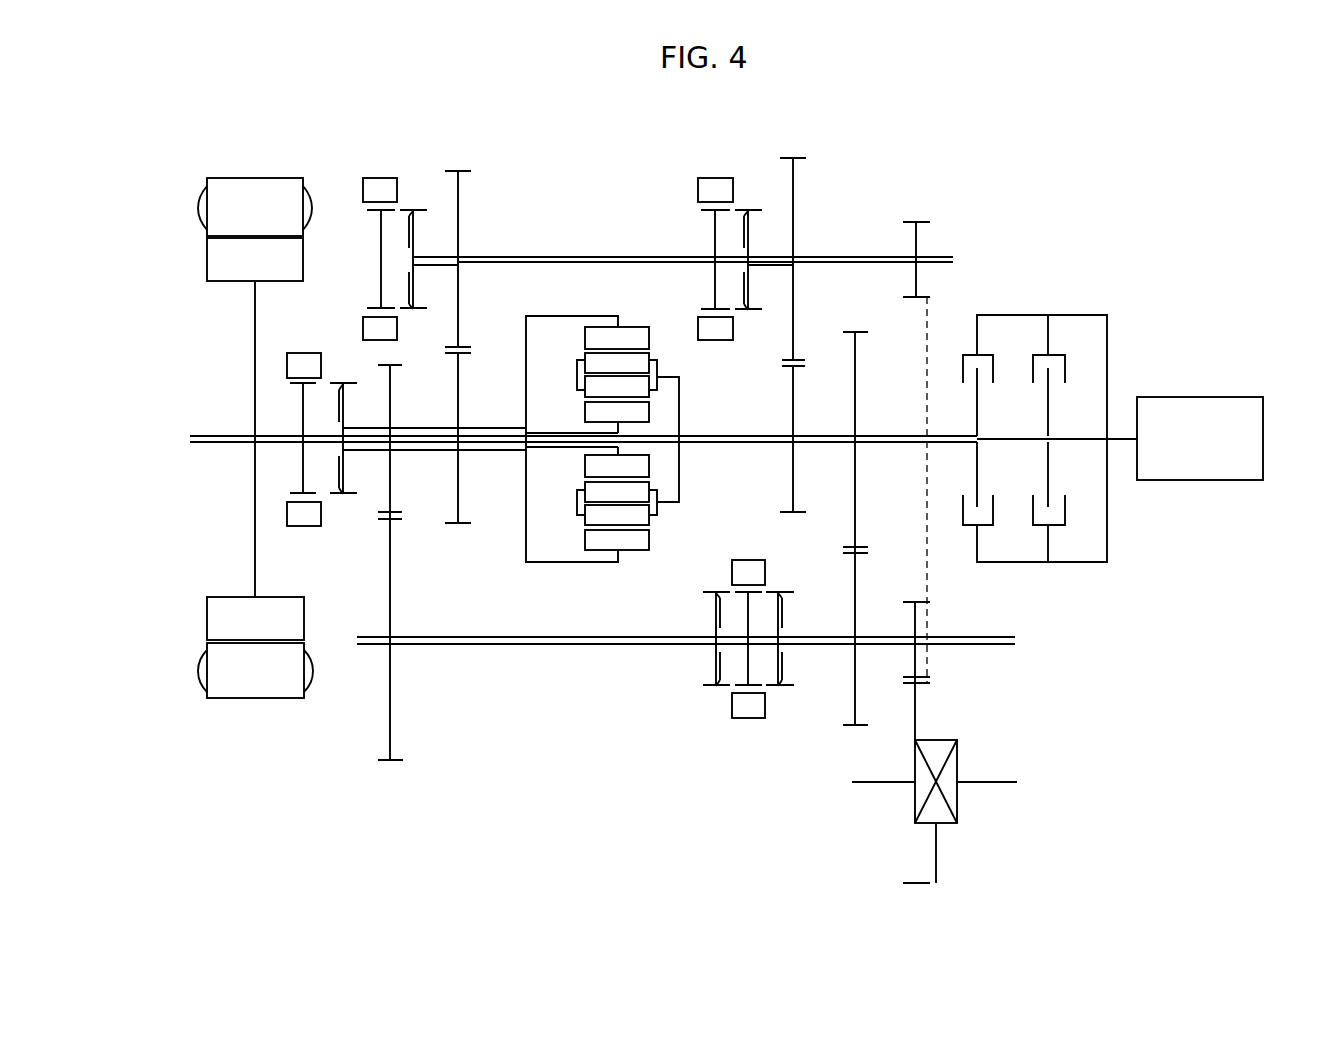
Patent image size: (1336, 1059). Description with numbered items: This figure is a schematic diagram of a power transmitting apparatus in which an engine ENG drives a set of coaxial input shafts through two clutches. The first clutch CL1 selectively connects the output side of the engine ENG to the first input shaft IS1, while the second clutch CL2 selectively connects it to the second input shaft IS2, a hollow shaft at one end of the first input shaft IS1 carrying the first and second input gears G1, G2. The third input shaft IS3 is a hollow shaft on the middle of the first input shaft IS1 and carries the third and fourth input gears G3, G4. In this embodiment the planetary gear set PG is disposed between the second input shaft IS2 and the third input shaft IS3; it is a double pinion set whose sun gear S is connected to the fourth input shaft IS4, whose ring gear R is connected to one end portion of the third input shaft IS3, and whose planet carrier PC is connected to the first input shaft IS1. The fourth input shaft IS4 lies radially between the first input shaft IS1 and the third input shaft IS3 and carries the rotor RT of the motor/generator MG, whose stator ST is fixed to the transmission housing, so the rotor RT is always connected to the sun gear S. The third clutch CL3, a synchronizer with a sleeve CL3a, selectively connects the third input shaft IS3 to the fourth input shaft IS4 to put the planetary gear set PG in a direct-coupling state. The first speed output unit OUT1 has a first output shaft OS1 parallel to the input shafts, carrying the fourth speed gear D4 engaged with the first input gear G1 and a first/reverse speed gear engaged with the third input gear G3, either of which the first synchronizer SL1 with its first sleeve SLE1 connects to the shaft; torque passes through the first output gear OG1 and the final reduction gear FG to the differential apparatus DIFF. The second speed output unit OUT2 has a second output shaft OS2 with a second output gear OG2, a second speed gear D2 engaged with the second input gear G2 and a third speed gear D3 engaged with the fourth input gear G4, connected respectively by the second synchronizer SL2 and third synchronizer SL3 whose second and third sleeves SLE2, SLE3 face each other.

The motor/generator MG is at (223, 438).
The stator ST is at (255, 207).
The rotor RT is at (255, 259).
The third clutch CL3 is at (283, 364).
The sleeve CL3a is at (304, 527).
The fourth input shaft IS4 is at (272, 436).
The third input shaft IS3 is at (497, 426).
The first input shaft IS1 is at (708, 445).
The second input shaft IS2 is at (884, 446).
The third synchronizer SL3 is at (354, 187).
The third sleeve SLE3 is at (380, 177).
The third speed gear D3 is at (456, 184).
The fourth input gear G4 is at (461, 487).
The third input gear G3 is at (393, 487).
The planetary gear set PG is at (628, 396).
The ring gear R is at (652, 337).
The planet carrier PC is at (660, 379).
The sun gear S is at (583, 410).
The second sleeve SLE2 is at (713, 178).
The second synchronizer SL2 is at (746, 170).
The second speed gear D2 is at (796, 180).
The second input gear G2 is at (797, 478).
The second output shaft OS2 is at (857, 256).
The second output gear OG2 is at (925, 243).
The second speed output unit OUT2 is at (1019, 253).
The first input gear G1 is at (858, 521).
The fourth speed gear D4 is at (853, 692).
The second clutch CL2 is at (998, 352).
The first clutch CL1 is at (1068, 352).
The engine ENG is at (1200, 438).
The first output shaft OS1 is at (883, 634).
The first sleeve SLE1 is at (748, 719).
The first synchronizer SL1 is at (713, 721).
The first output gear OG1 is at (927, 626).
The final reduction gear FG is at (920, 713).
The differential apparatus DIFF is at (962, 767).
The first speed output unit OUT1 is at (1035, 643).